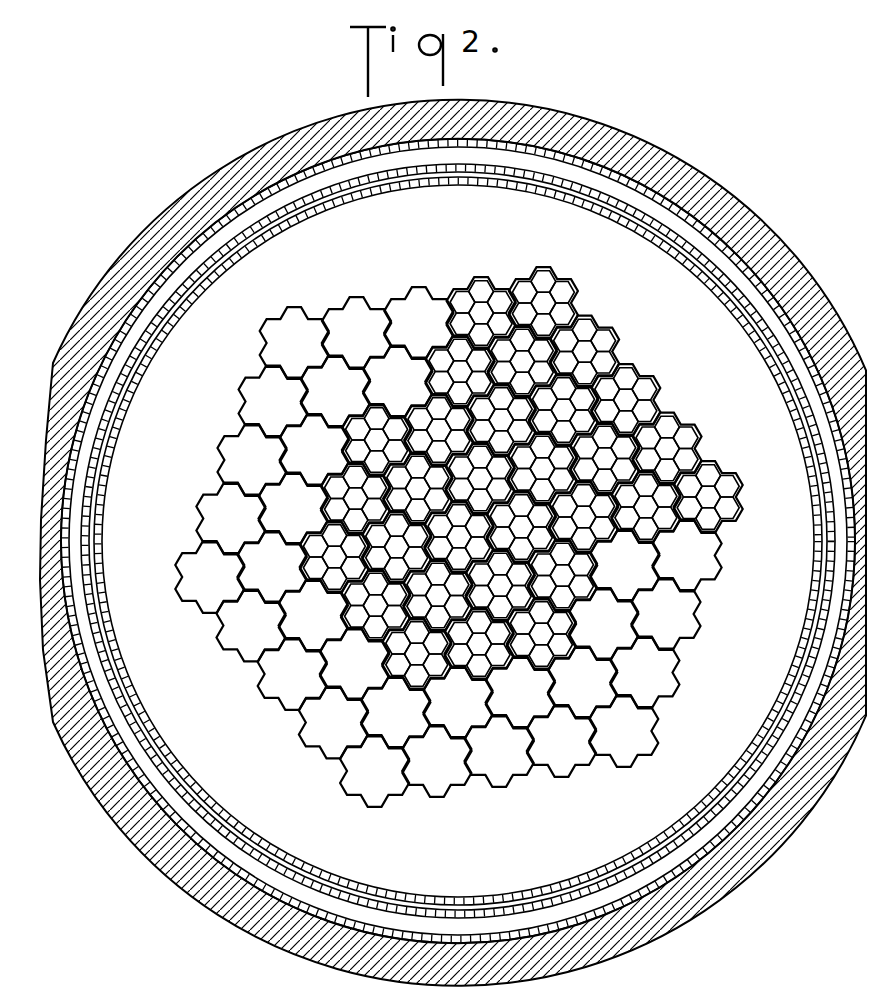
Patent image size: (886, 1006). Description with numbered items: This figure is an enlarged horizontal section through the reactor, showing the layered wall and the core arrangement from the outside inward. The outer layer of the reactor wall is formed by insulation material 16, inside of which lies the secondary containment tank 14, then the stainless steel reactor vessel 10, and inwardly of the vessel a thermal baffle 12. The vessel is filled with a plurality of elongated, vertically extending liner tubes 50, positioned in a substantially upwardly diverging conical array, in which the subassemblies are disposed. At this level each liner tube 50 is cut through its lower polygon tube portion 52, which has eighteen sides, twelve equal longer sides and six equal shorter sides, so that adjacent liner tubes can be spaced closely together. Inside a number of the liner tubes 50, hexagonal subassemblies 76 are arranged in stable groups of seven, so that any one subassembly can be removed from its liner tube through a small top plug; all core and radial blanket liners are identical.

The reactor vessel 10 is at (650, 210).
The thermal baffle 12 is at (700, 268).
The secondary containment tank 14 is at (606, 172).
The insulation material 16 is at (687, 178).
The liner tubes 50 is at (483, 555).
The lower polygon tube portion 52 is at (680, 676).
The hexagonal subassemblies 76 is at (728, 488).